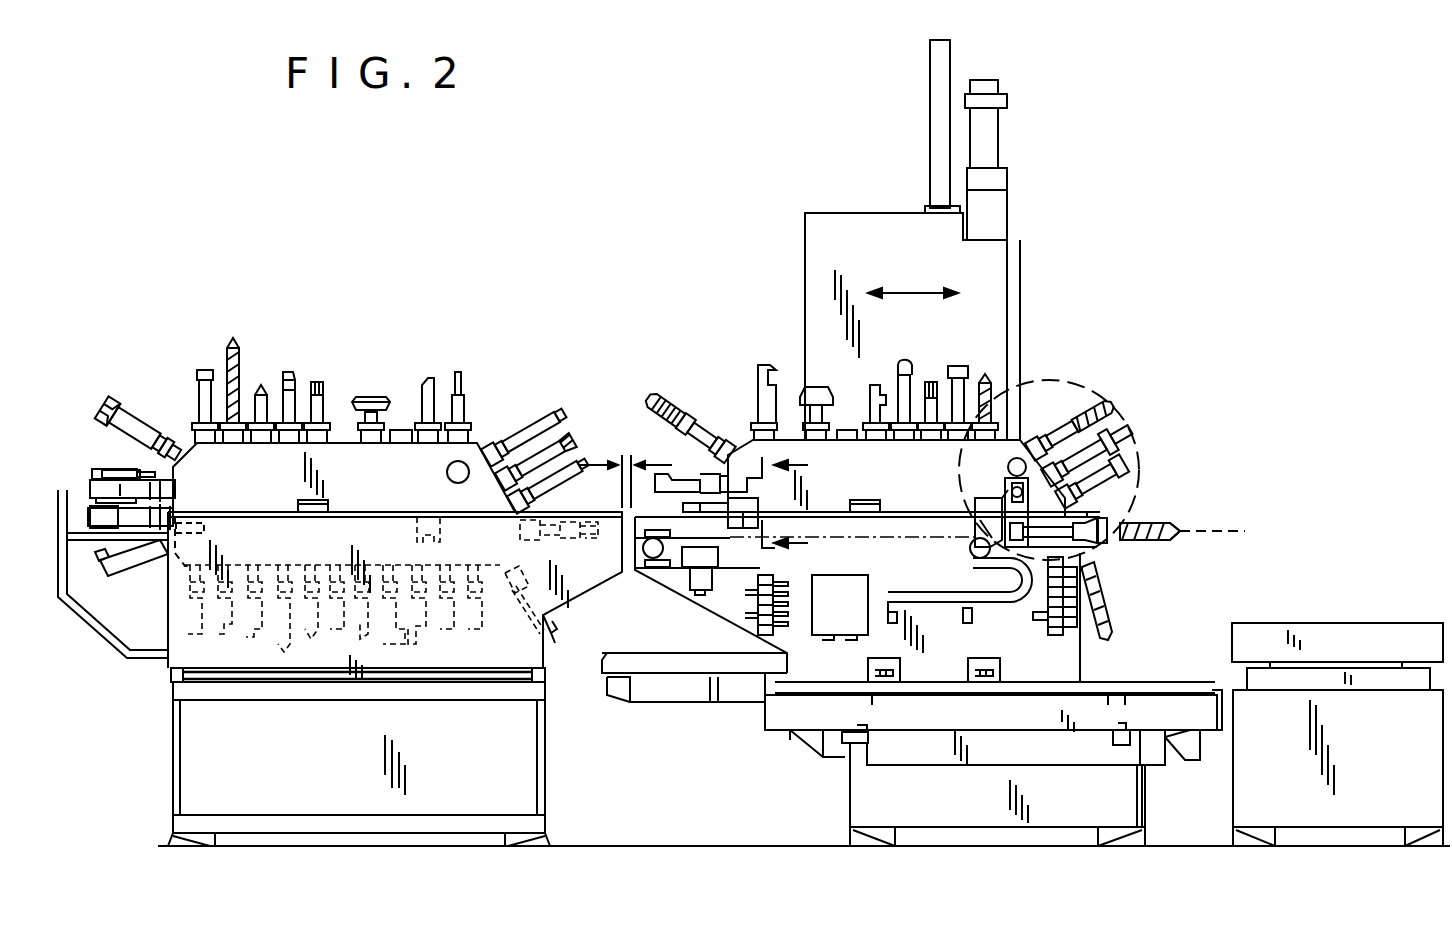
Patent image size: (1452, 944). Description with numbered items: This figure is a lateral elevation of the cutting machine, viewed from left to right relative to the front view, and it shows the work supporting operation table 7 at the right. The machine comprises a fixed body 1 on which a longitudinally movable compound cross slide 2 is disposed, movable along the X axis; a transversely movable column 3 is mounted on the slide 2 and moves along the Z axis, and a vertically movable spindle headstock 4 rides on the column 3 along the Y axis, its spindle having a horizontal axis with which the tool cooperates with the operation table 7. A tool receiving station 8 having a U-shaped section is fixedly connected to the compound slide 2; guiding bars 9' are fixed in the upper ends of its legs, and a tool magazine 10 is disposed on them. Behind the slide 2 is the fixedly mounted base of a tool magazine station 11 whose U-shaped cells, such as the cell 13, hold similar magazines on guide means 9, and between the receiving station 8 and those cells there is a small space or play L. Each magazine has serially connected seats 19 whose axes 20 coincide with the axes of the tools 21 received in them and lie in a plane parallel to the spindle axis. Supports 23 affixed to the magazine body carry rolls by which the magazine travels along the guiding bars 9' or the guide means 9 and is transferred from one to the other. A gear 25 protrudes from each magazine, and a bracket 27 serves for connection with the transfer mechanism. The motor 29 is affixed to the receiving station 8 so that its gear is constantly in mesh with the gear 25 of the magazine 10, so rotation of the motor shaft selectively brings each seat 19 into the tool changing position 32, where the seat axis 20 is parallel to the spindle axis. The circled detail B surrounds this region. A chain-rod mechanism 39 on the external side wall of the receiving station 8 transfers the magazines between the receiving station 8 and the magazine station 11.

The fixed body 1 is at (983, 812).
The compound cross slide 2 is at (1168, 712).
The transversely movable column 3 is at (846, 235).
The spindle headstock 4 is at (852, 509).
The workpiece supporting operation table 7 is at (1335, 637).
The tool receiving station 8 is at (928, 663).
The guide means 9 is at (391, 495).
The guiding bars 9' is at (871, 484).
The tool magazine 10 is at (790, 450).
The tool magazine station 11 is at (376, 795).
The cell 13 is at (198, 452).
The seat 19 is at (402, 432).
The axis of seat 20 is at (1205, 532).
The tool 21 is at (374, 396).
The support 23 is at (183, 522).
The gear 25 is at (460, 465).
The bracket 27 is at (978, 505).
The motor 29 is at (1010, 492).
The tool changing position 32 is at (1145, 522).
The chain-rod mechanism 39 is at (918, 550).
The detail circle B is at (1094, 395).
The space or play L is at (624, 476).